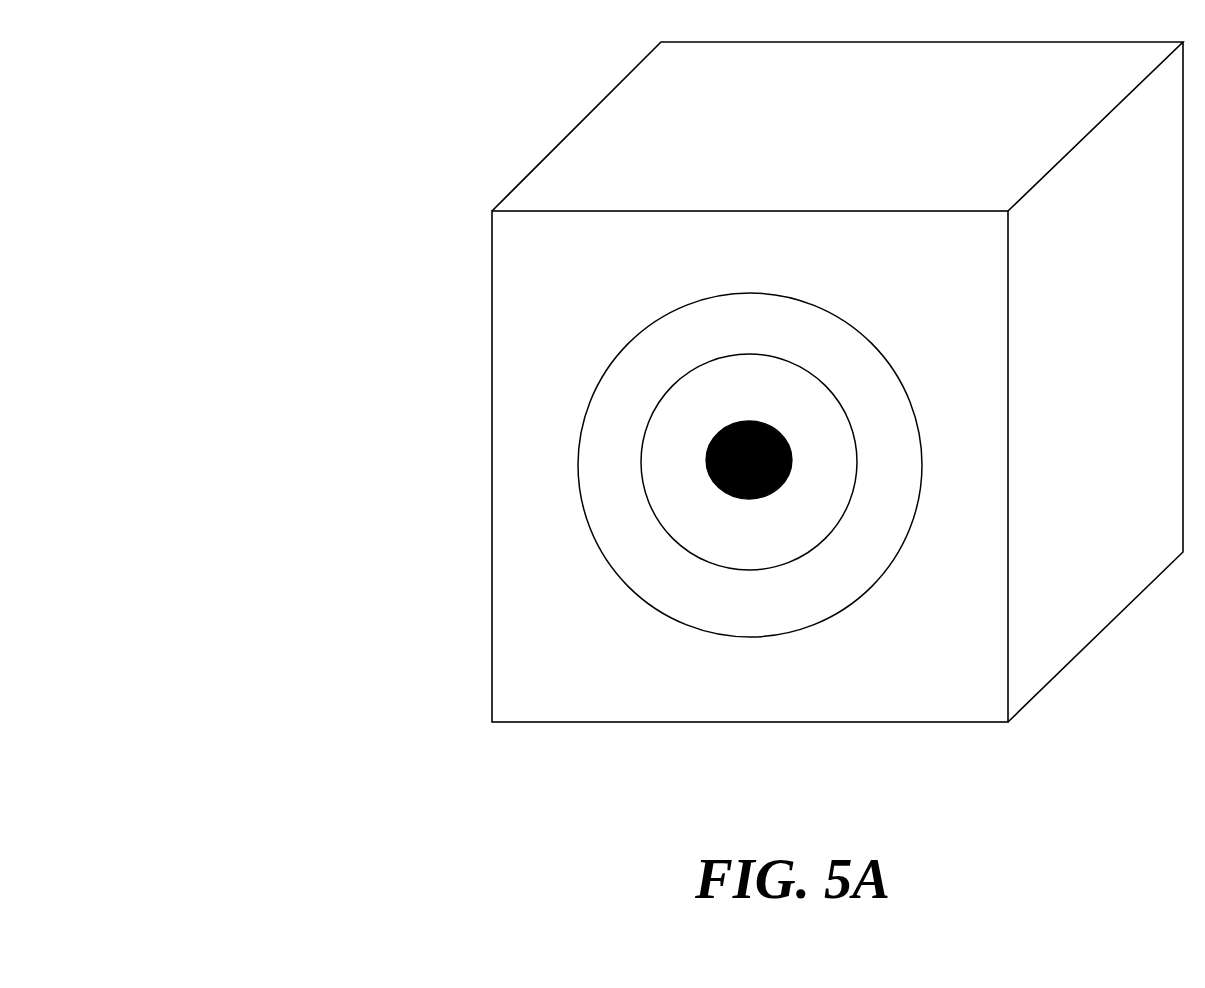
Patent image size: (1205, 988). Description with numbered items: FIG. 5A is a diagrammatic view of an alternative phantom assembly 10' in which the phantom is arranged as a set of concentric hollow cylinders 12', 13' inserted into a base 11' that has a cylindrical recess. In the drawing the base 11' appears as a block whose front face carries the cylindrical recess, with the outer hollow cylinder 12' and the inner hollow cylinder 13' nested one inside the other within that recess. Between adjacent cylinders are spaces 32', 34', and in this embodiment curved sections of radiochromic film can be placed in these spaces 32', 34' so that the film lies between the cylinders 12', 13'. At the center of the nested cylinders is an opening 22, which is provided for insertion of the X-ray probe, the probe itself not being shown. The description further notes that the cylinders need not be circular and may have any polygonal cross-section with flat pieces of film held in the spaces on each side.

The composite structure 10' is at (694, 370).
The base 11' is at (632, 466).
The concentric hollow cylinder 12' is at (557, 465).
The concentric hollow cylinder 13' is at (514, 462).
The opening 22 is at (722, 493).
The space between adjacent cylinders 32' is at (523, 205).
The space between adjacent cylinders 34' is at (577, 188).